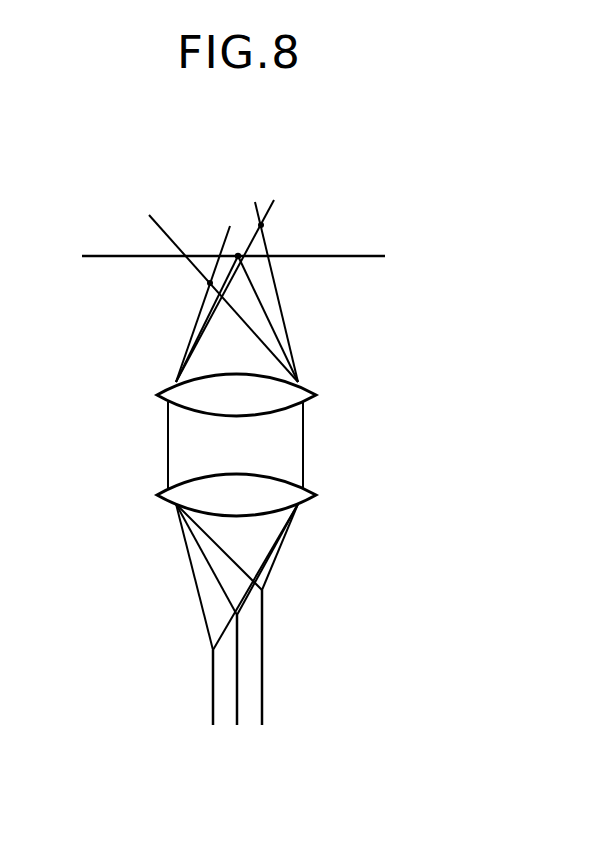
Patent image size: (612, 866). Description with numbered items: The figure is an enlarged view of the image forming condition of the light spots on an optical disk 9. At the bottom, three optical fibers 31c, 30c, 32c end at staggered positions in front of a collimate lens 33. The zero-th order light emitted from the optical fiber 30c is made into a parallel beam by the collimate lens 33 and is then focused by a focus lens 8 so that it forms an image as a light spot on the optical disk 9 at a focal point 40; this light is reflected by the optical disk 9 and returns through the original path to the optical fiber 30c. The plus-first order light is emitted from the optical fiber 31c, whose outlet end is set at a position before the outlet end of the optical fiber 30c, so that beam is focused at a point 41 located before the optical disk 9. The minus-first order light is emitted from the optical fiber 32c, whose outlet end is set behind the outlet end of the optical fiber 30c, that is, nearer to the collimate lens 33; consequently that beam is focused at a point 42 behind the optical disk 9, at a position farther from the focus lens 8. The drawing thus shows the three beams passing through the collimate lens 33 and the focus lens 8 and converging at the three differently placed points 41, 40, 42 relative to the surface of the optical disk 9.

The focus lens 8 is at (322, 400).
The optical disk 9 is at (385, 263).
The collimate lens 33 is at (320, 503).
The focal point 40 is at (238, 250).
The point 41 is at (204, 290).
The point 42 is at (268, 224).
The optical fiber 30c is at (238, 731).
The optical fiber 31c is at (208, 695).
The optical fiber 32c is at (266, 678).